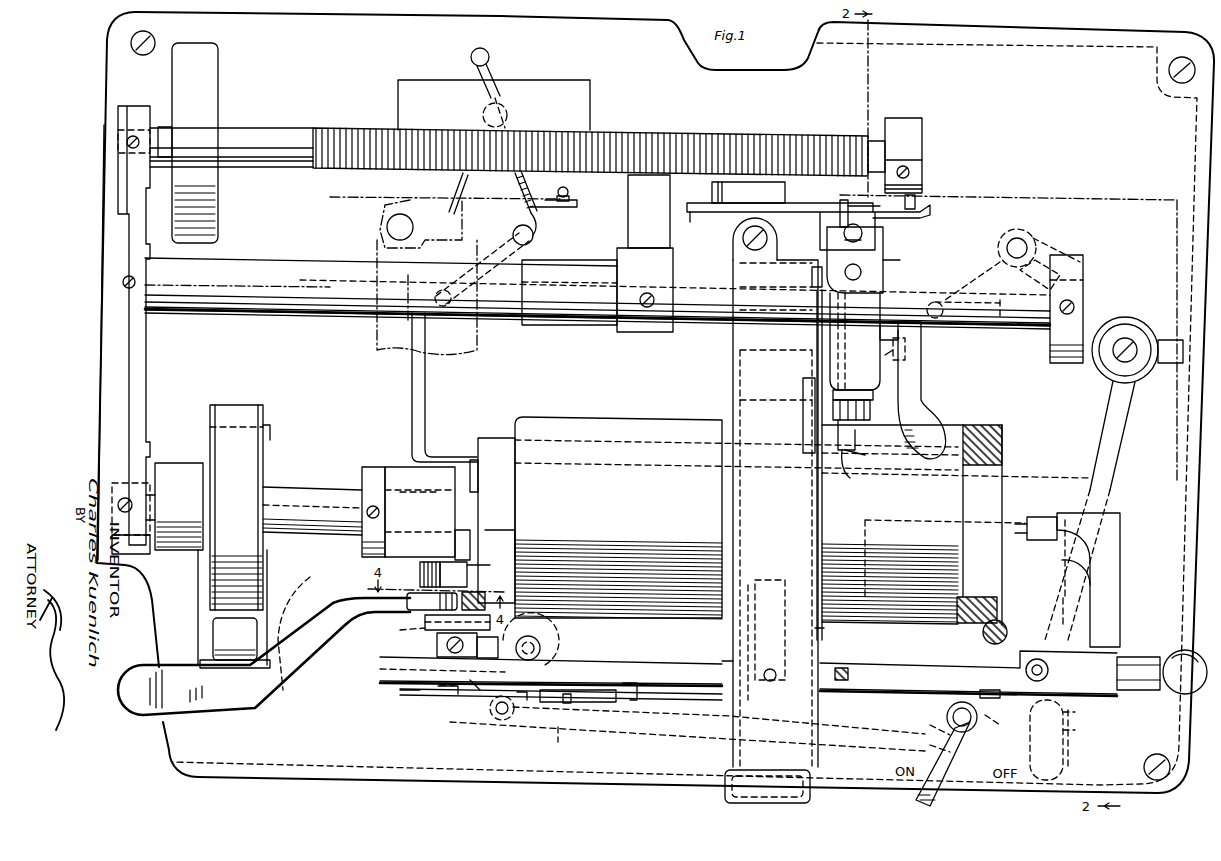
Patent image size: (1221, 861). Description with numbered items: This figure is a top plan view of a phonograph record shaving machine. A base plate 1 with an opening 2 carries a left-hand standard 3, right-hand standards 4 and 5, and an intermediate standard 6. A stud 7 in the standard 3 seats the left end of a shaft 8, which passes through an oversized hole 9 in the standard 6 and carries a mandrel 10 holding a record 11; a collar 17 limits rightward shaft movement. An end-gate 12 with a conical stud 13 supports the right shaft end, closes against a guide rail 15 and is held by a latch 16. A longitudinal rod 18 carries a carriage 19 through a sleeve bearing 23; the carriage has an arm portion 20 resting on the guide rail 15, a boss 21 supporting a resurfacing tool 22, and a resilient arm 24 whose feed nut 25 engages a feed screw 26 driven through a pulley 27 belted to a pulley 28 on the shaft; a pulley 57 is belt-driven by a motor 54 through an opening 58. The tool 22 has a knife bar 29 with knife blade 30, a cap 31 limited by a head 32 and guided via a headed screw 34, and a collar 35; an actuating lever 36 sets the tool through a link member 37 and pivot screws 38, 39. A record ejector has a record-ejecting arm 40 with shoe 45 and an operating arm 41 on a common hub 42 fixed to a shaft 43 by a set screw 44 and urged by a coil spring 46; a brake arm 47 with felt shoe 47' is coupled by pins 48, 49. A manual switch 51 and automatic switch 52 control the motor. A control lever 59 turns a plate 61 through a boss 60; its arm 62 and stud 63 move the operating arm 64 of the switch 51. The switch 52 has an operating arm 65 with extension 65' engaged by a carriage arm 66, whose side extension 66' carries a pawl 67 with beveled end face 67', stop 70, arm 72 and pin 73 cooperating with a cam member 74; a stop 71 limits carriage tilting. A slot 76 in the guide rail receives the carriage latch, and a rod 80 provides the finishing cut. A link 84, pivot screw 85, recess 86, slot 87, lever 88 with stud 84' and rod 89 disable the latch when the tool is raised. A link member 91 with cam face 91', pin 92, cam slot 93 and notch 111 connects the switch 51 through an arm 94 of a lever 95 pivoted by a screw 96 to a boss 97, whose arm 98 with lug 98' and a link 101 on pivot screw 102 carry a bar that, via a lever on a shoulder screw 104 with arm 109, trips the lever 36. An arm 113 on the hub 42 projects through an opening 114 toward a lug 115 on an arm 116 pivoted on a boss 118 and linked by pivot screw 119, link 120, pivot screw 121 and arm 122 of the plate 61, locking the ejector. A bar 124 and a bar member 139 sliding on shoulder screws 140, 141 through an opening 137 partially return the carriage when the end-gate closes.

The base plate 1 is at (242, 24).
The opening 2 is at (424, 381).
The left-hand standard 3 is at (112, 383).
The right-hand standard 4 is at (1070, 300).
The right-hand standard 5 is at (922, 133).
The intermediate standard 6 is at (385, 470).
The conically pointed stud 7 is at (112, 496).
The shaft 8 is at (294, 487).
The oversized hole 9 is at (403, 490).
The mandrel 10 is at (492, 440).
The record 11 is at (562, 425).
The end-gate 12 is at (1070, 510).
The adjustable conical stud 13 is at (1040, 515).
The guide rail 15 is at (645, 672).
The latch 16 is at (1180, 650).
The collar 17 is at (370, 466).
The longitudinal rod 18 is at (245, 262).
The carriage 19 is at (735, 340).
The arm portion 20 is at (740, 505).
The boss 21 is at (853, 388).
The resurfacing tool 22 is at (858, 436).
The sleeve bearing 23 is at (580, 264).
The resilient arm 24 is at (632, 203).
The feed nut 25 is at (640, 180).
The feed screw 26 is at (330, 130).
The pulley 27 is at (218, 93).
The pulley 28 is at (178, 470).
The knife bar 29 is at (860, 458).
The knife blade 30 is at (855, 476).
The hollow cap 31 is at (885, 248).
The head 32 is at (862, 272).
The headed screw 34 is at (865, 237).
The collar 35 is at (851, 411).
The actuating lever 36 is at (922, 408).
The link member 37 is at (855, 341).
The pivot screw 38 is at (906, 360).
The pivot screw 39 is at (900, 260).
The record-ejecting arm 40 is at (425, 612).
The operating arm 41 is at (186, 712).
The hub 42 is at (437, 645).
The shaft 43 is at (425, 630).
The set screw 44 is at (415, 695).
The record engaging shoe 45 is at (520, 535).
The coil spring 46 is at (405, 605).
The brake arm 47 is at (438, 563).
The brake shoe 47' is at (486, 537).
The pin 48 is at (420, 570).
The pin 49 is at (458, 560).
The manually operable switch 51 is at (880, 518).
The automatically operated switch 52 is at (398, 99).
The motor 54 is at (294, 626).
The pulley 57 is at (212, 400).
The opening 58 is at (272, 436).
The control lever 59 is at (940, 785).
The boss 60 is at (947, 715).
The plate 61 is at (985, 752).
The arm 62 is at (1030, 660).
The stud 63 is at (1005, 622).
The operating arm 64 is at (990, 585).
The operating arm 65 is at (540, 208).
The rearward extension 65' is at (490, 130).
The arm 66 is at (832, 231).
The side extension 66' is at (886, 219).
The pawl 67 is at (780, 199).
The beveled end face 67' is at (701, 221).
The stop 70 is at (848, 212).
The stop 71 is at (380, 252).
The arm 72 is at (930, 210).
The pin 73 is at (912, 195).
The cam member 74 is at (748, 192).
The slot 76 is at (395, 685).
The rod 80 is at (735, 660).
The link 84 is at (799, 465).
The stud 84' is at (833, 636).
The pivot screw 85 is at (810, 276).
The recess 86 is at (740, 400).
The slot 87 is at (803, 417).
The lever 88 is at (786, 579).
The rod 89 is at (749, 580).
The link member 91 is at (1114, 449).
The cam face 91' is at (1002, 722).
The pin 92 is at (1075, 712).
The cam slot 93 is at (1075, 730).
The arm 94 is at (1062, 250).
The lever 95 is at (1030, 232).
The pivot screw 96 is at (1028, 243).
The boss 97 is at (1005, 230).
The arm 98 is at (963, 327).
The lug 98' is at (1010, 326).
The link 101 is at (528, 266).
The pivot screw 102 is at (530, 246).
The shoulder screw 104 is at (900, 330).
The arm 109 is at (897, 352).
The notch 111 is at (1068, 750).
The arm 113 is at (475, 692).
The opening 114 is at (545, 628).
The lug 115 is at (496, 712).
The arm 116 is at (540, 650).
The boss 118 is at (536, 645).
The pivot screw 119 is at (492, 720).
The link 120 is at (560, 730).
The pivot screw 121 is at (928, 735).
The arm 122 is at (928, 752).
The horizontal bar 124 is at (445, 690).
The opening 137 is at (665, 706).
The bar member 139 is at (880, 690).
The shoulder screw 140 is at (843, 668).
The shoulder screw 141 is at (985, 692).